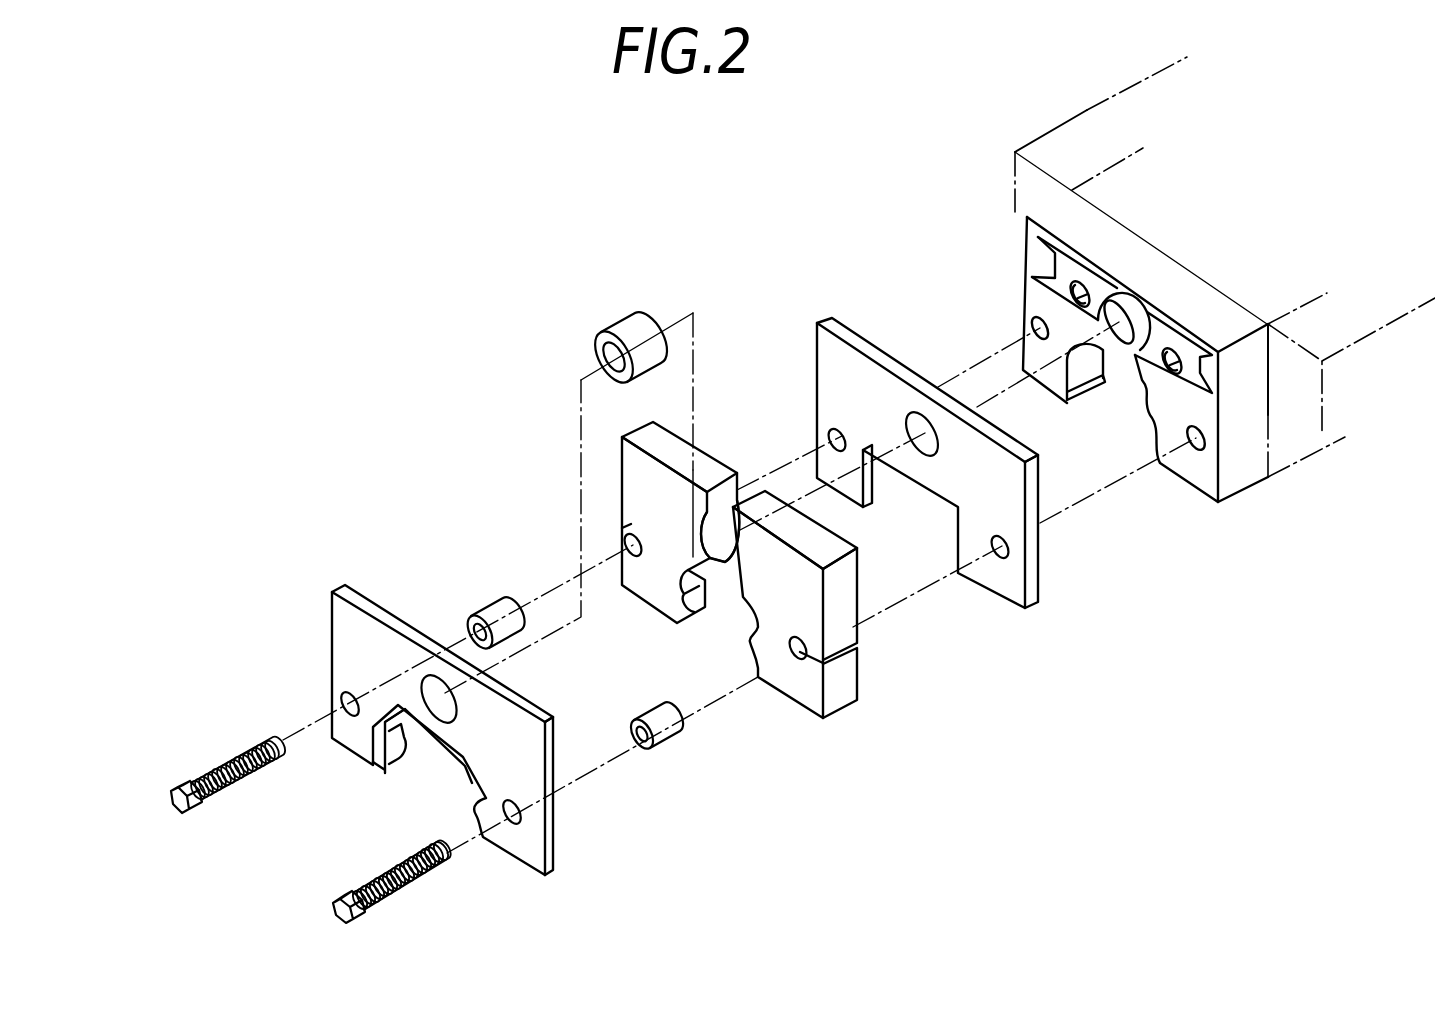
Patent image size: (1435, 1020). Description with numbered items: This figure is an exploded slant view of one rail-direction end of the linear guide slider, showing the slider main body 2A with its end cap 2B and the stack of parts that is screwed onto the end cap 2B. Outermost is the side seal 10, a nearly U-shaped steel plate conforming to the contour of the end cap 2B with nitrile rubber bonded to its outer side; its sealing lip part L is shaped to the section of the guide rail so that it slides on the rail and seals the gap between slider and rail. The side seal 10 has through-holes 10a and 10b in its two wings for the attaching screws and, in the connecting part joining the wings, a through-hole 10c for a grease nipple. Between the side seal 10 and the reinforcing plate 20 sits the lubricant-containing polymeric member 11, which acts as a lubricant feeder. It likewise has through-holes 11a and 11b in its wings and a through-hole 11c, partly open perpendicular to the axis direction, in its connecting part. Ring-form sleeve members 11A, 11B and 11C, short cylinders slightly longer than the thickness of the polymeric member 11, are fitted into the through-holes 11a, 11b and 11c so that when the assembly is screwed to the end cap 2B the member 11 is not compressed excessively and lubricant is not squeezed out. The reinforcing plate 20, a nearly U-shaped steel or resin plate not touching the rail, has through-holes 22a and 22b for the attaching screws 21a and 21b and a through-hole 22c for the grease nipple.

The slider main body 2A is at (1031, 142).
The end cap 2B is at (1040, 210).
The side seal 10 is at (528, 862).
The through-hole 10a is at (515, 820).
The through-hole 10b is at (342, 702).
The through-hole for grease nipple 10c is at (418, 692).
The lubricant-containing polymeric member 11 is at (836, 692).
The through-hole 11a is at (791, 665).
The through-hole 11b is at (630, 562).
The through-hole for grease nipple 11c is at (730, 558).
The ring-form sleeve member 11A is at (672, 748).
The ring-form sleeve member 11B is at (510, 605).
The ring-form sleeve member 11C is at (630, 326).
The reinforcing plate 20 is at (1013, 590).
The through-hole 22a is at (998, 550).
The through-hole 22b is at (834, 440).
The through-hole for grease nipple 22c is at (910, 428).
The attaching screw 21a is at (362, 884).
The attaching screw 21b is at (238, 758).
The sealing lip part L is at (407, 765).